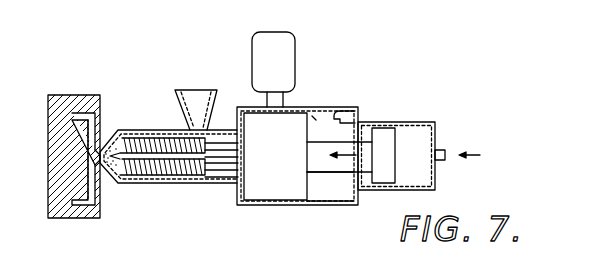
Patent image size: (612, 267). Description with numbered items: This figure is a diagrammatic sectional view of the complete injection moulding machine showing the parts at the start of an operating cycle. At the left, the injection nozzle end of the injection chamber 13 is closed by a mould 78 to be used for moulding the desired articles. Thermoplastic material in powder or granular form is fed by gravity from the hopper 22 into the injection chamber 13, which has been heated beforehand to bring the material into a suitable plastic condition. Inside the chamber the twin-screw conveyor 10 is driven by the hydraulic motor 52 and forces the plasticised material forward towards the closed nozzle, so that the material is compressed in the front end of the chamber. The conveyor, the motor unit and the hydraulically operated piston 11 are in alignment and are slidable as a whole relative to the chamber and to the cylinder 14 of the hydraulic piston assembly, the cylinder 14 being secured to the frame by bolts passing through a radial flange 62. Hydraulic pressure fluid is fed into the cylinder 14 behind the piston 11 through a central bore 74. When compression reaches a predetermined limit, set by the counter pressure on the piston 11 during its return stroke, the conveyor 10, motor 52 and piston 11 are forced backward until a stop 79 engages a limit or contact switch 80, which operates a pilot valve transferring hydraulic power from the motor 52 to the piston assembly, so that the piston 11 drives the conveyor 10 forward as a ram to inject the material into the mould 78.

The mould 78 is at (79, 94).
The hopper 22 is at (194, 107).
The injection chamber 13 is at (137, 130).
The twin-screw conveyor 10 is at (176, 142).
The hydraulic motor 52 is at (277, 47).
The stop 79 is at (316, 117).
The limit or contact switch 80 is at (342, 109).
The cylinder 14 is at (408, 140).
The central bore 74 is at (446, 152).
The radial flange 62 is at (342, 168).
The piston 11 is at (381, 175).